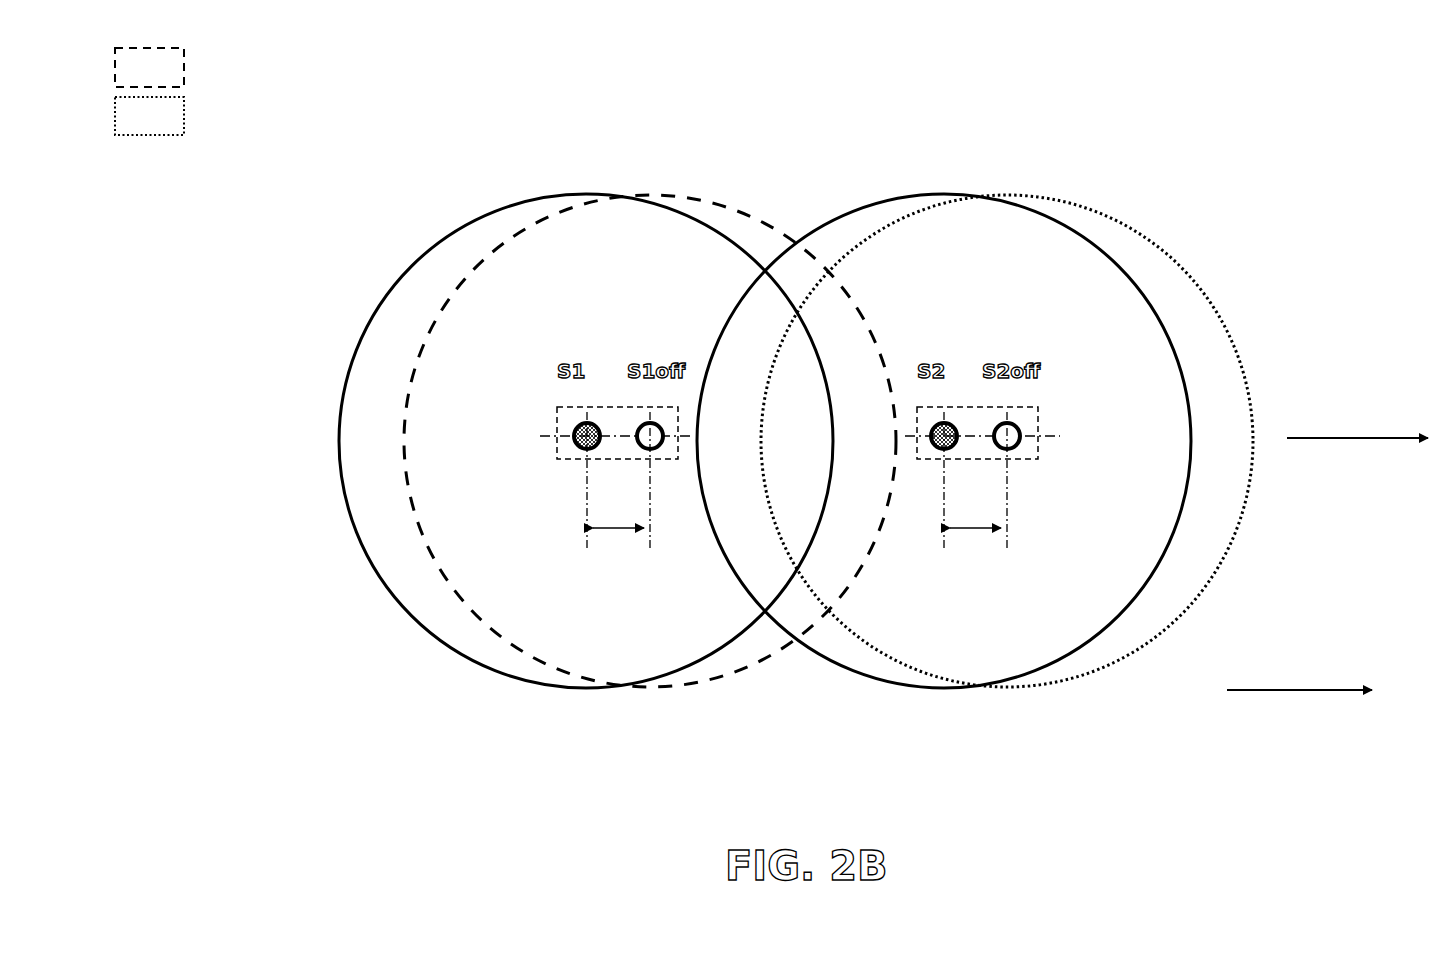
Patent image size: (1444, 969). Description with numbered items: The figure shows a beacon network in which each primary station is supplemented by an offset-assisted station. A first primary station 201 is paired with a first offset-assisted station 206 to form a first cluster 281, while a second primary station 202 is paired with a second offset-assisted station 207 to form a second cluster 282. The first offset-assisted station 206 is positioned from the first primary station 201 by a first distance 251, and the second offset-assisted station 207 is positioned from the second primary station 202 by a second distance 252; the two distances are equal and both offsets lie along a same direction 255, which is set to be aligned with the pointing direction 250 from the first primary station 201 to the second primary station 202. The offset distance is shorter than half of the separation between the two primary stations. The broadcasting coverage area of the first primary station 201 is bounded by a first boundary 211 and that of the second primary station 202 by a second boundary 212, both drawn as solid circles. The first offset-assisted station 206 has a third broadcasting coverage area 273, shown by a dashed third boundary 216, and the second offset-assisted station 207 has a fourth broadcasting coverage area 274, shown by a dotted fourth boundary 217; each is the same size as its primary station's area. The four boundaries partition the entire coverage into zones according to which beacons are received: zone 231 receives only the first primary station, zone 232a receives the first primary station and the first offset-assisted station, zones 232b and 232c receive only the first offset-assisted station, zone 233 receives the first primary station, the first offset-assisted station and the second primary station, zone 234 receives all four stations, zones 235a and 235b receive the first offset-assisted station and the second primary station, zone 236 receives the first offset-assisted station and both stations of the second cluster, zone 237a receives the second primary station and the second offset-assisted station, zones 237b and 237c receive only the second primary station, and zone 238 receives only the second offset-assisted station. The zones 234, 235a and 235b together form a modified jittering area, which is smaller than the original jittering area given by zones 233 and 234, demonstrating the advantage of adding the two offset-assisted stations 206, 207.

The first primary station 201 is at (570, 466).
The second primary station 202 is at (930, 466).
The first offset-assisted station 206 is at (635, 466).
The second offset-assisted station 207 is at (992, 466).
The first boundary 211 is at (558, 483).
The second boundary 212 is at (973, 406).
The third boundary 216 is at (626, 484).
The fourth boundary 217 is at (1041, 405).
The zone 231 is at (391, 409).
The zone 232a is at (589, 319).
The zone 232b is at (738, 182).
The zone 232c is at (710, 697).
The zone 233 is at (754, 376).
The zone 234 is at (814, 411).
The zone 235a is at (808, 187).
The zone 235b is at (785, 698).
The zone 236 is at (877, 376).
The zone 237a is at (1017, 319).
The zone 237b is at (873, 182).
The zone 237c is at (845, 697).
The zone 238 is at (1239, 409).
The pointing direction 250 is at (1357, 409).
The first distance 251 is at (618, 502).
The second distance 252 is at (975, 502).
The direction 255 is at (1299, 660).
The third broadcasting coverage area 273 is at (391, 67).
The fourth broadcasting coverage area 274 is at (391, 116).
The first cluster 281 is at (556, 418).
The second cluster 282 is at (1040, 418).